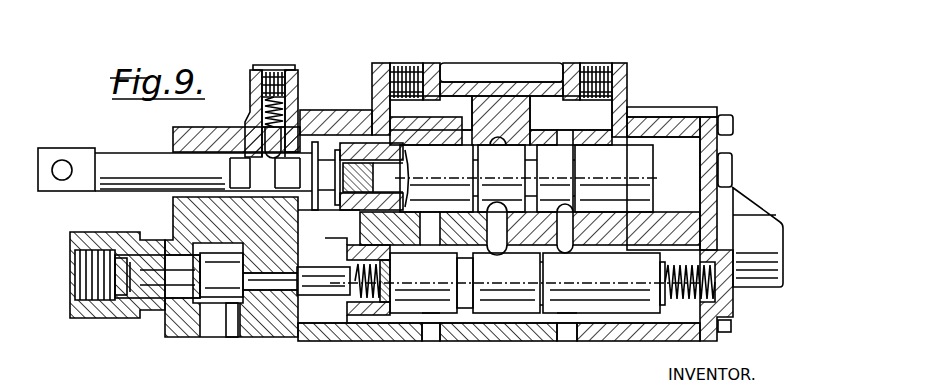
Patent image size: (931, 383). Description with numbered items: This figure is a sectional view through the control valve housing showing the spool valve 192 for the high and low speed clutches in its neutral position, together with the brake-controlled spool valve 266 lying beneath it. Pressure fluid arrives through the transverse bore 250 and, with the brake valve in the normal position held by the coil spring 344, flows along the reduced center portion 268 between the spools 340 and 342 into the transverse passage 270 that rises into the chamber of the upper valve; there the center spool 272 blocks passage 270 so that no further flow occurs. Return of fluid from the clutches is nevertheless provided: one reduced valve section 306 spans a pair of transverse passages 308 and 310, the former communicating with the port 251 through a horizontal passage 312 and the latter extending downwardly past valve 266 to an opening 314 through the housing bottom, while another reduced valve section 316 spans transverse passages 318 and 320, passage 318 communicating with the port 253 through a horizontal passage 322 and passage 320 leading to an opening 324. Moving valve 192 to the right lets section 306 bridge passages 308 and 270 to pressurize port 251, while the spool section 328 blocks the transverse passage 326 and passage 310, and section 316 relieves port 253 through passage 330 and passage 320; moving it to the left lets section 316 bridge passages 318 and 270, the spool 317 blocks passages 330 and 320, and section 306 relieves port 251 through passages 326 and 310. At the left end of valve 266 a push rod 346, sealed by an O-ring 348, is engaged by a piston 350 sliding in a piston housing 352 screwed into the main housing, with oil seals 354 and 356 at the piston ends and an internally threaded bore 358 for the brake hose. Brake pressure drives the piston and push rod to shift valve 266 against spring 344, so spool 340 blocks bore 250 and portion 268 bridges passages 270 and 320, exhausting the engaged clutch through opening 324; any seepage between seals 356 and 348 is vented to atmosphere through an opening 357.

The spool valve 192 is at (135, 153).
The transverse bore 250 is at (462, 262).
The port 251 is at (415, 64).
The port 253 is at (600, 64).
The brake-controlled spool valve 266 is at (605, 323).
The reduced center portion 268 is at (522, 300).
The transverse passage 270 is at (495, 318).
The center spool 272 is at (499, 178).
The reduced valve section 306 is at (462, 186).
The transverse passage 308 is at (501, 79).
The transverse passage 310 is at (423, 282).
The horizontal passage 312 is at (447, 107).
The opening 314 is at (428, 334).
The reduced valve section 316 is at (575, 165).
The spool 317 is at (640, 195).
The transverse passage 318 is at (549, 178).
The transverse passage 320 is at (562, 245).
The horizontal passage 322 is at (540, 108).
The opening 324 is at (560, 340).
The transverse passage 326 is at (300, 113).
The spool section 328 is at (436, 178).
The passage 330 is at (608, 158).
The spool 340 is at (385, 302).
The spool 342 is at (660, 305).
The coil spring 344 is at (675, 262).
The push rod 346 is at (272, 285).
The O-ring 348 is at (250, 255).
The piston 350 is at (152, 292).
The piston housing 352 is at (95, 320).
The oil seal 354 is at (133, 257).
The oil seal 356 is at (205, 320).
The opening 357 is at (232, 338).
The internally threaded bore 358 is at (78, 265).